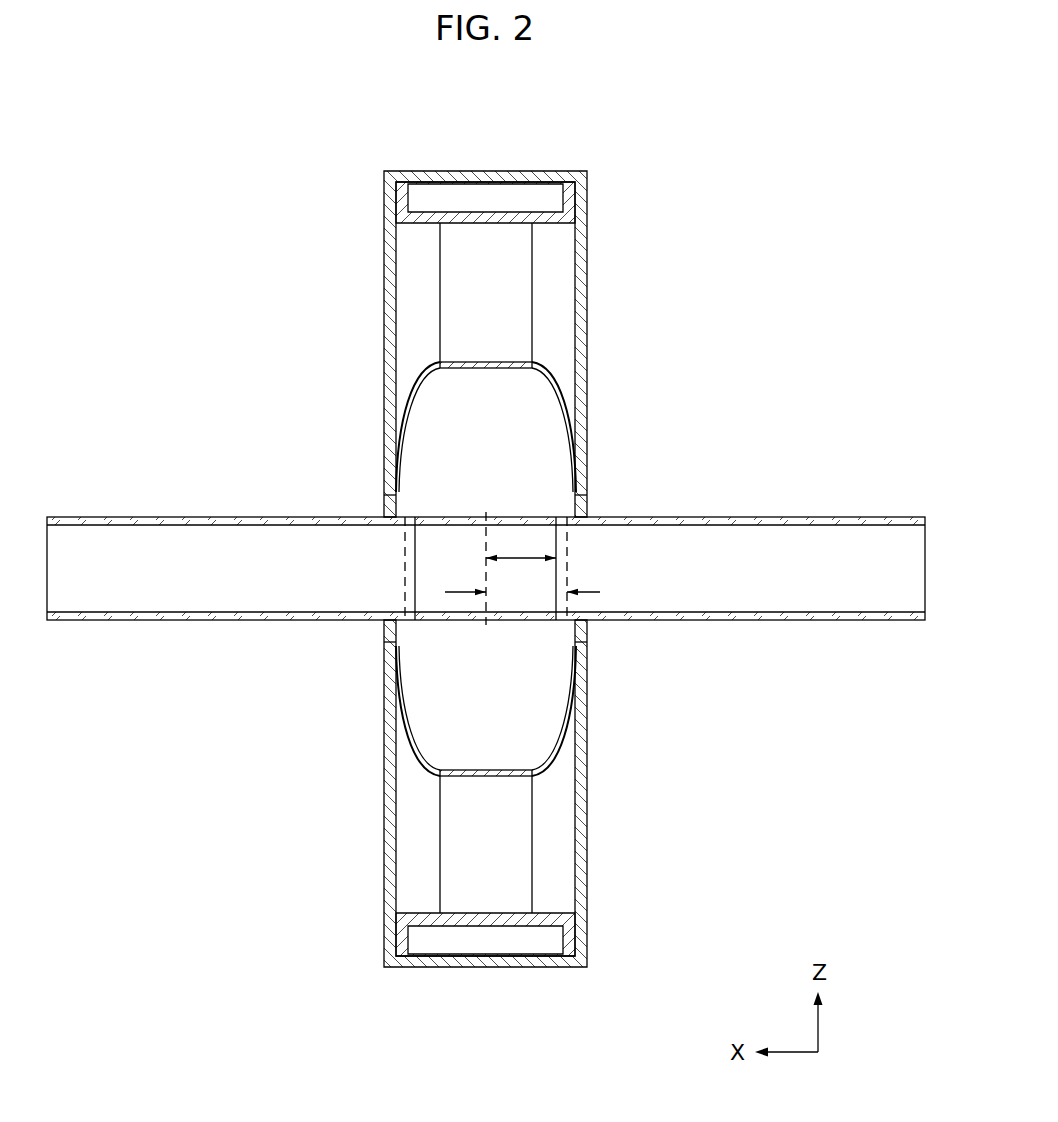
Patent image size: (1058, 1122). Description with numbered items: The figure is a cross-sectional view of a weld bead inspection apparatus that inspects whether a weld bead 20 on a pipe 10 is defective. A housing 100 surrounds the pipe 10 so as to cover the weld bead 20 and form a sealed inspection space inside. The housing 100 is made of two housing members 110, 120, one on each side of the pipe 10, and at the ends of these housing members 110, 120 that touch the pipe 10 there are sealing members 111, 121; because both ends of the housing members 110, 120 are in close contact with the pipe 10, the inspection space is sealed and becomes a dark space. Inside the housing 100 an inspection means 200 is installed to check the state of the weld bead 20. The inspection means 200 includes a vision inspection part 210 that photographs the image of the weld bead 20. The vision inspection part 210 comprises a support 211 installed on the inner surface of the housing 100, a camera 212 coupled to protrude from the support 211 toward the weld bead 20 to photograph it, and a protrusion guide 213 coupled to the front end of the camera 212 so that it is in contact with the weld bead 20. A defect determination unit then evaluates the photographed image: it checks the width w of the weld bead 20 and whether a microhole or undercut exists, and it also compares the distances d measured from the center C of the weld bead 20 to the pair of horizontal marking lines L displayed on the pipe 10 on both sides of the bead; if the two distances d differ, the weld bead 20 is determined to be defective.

The pipe 10 is at (817, 510).
The weld bead 20 is at (440, 573).
The housing 100 is at (473, 527).
The housing member 110 is at (476, 344).
The sealing member 111 is at (582, 508).
The housing member 120 is at (468, 793).
The sealing member 121 is at (587, 632).
The inspection means 200 is at (543, 569).
The vision inspection part 210 is at (591, 569).
The support 211 is at (513, 218).
The camera 212 is at (493, 290).
The protrusion guide 213 is at (560, 563).
The width of the weld bead w is at (521, 546).
The distance d is at (522, 581).
The center of the weld bead C is at (486, 575).
The marking line L is at (567, 565).